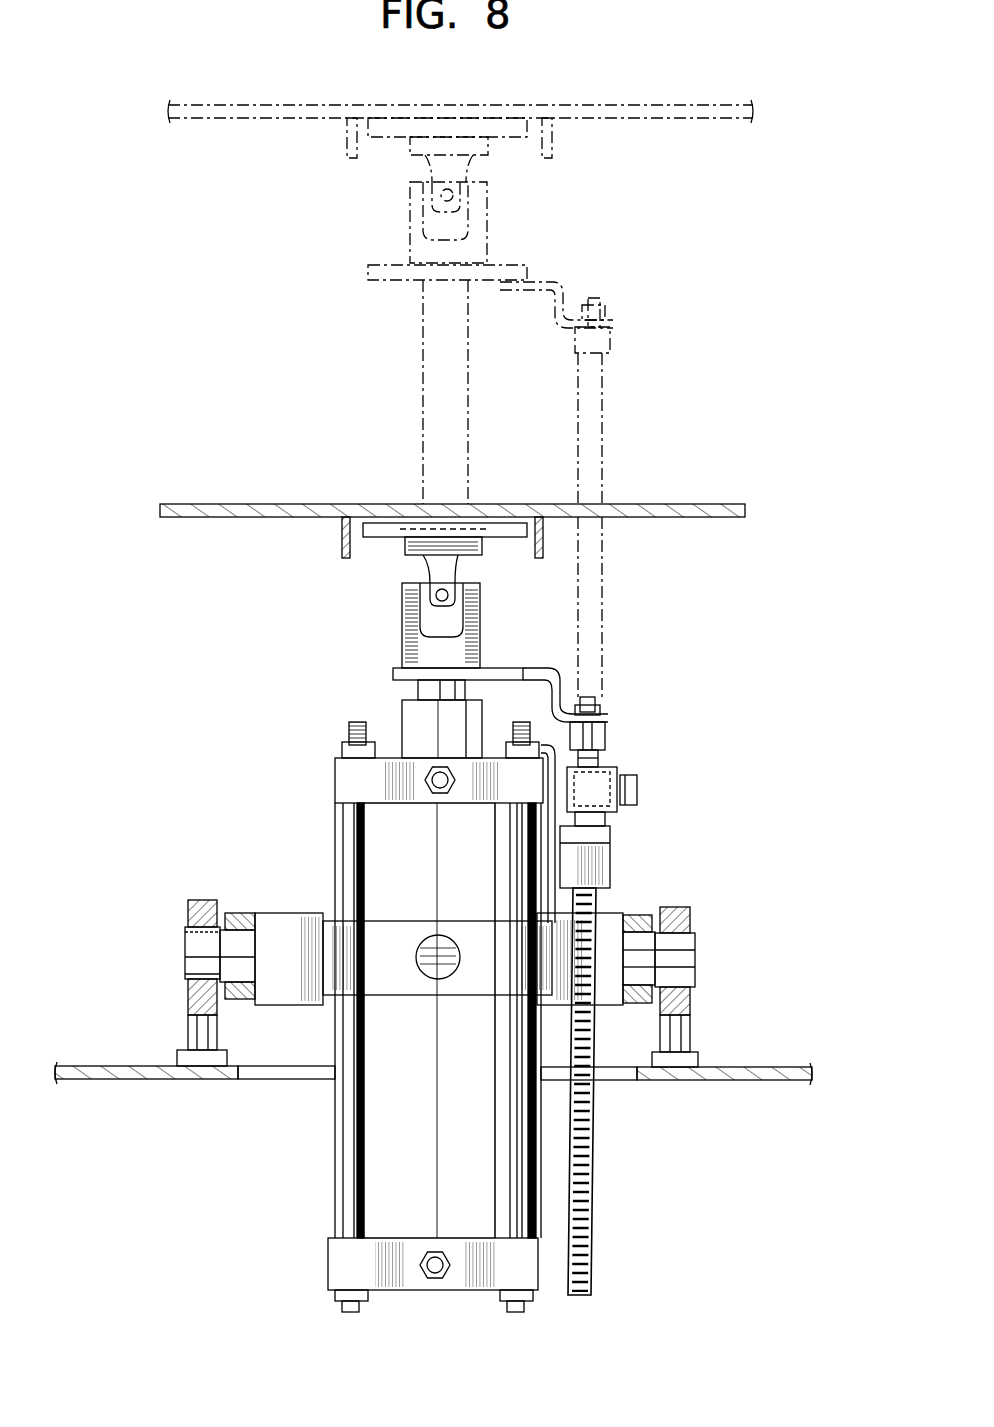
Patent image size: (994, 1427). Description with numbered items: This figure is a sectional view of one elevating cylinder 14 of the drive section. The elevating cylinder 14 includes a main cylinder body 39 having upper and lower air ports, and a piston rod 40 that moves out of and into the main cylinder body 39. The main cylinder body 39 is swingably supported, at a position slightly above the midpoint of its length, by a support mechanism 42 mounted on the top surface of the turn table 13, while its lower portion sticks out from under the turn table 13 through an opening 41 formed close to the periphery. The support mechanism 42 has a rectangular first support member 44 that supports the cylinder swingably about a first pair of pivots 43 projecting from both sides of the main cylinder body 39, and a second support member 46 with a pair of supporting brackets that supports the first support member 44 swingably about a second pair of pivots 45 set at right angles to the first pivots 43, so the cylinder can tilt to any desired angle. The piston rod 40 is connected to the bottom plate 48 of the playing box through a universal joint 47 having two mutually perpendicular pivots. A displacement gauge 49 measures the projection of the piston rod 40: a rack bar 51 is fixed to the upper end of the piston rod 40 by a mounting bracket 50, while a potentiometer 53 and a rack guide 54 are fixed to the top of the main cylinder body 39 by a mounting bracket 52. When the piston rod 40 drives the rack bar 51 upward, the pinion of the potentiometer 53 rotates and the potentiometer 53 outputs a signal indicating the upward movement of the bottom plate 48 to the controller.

The turn table 13 is at (703, 1080).
The elevating cylinder 14 is at (308, 855).
The main cylinder body 39 is at (333, 1198).
The piston rod 40 is at (420, 396).
The opening 41 is at (268, 1078).
The support mechanism 42 is at (695, 905).
The first pair of pivots 43 is at (438, 980).
The first support member 44 is at (283, 913).
The second pair of pivots 45 is at (200, 957).
The second support member 46 is at (200, 903).
The universal joint 47 is at (400, 225).
The bottom plate 48 is at (596, 120).
The displacement gauge 49 is at (625, 712).
The mounting bracket 50 is at (540, 685).
The rack bar 51 is at (605, 392).
The mounting bracket 52 is at (570, 852).
The potentiometer 53 is at (600, 765).
The rack guide 54 is at (605, 870).